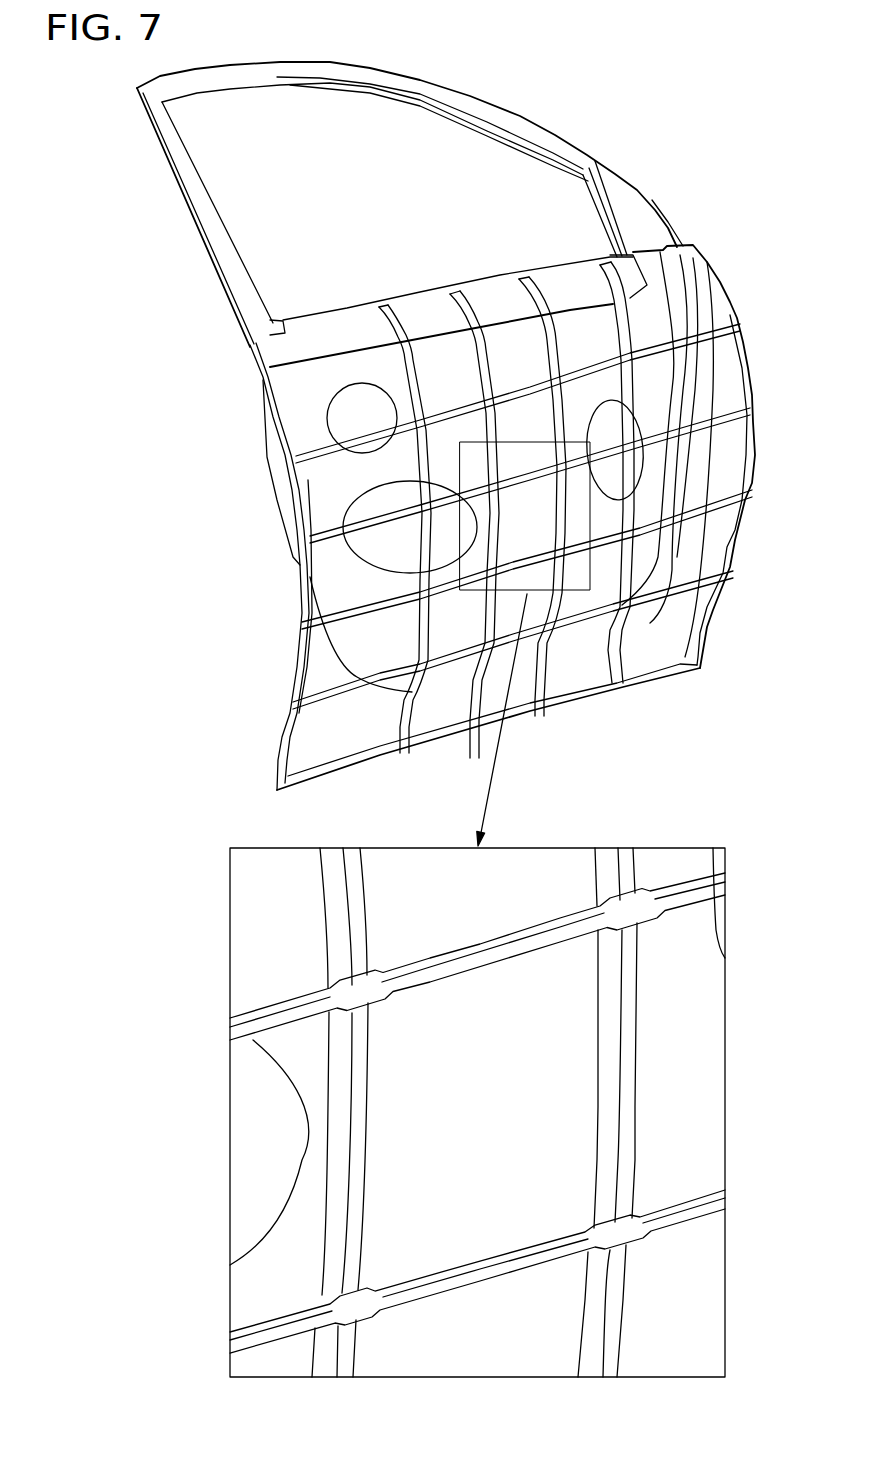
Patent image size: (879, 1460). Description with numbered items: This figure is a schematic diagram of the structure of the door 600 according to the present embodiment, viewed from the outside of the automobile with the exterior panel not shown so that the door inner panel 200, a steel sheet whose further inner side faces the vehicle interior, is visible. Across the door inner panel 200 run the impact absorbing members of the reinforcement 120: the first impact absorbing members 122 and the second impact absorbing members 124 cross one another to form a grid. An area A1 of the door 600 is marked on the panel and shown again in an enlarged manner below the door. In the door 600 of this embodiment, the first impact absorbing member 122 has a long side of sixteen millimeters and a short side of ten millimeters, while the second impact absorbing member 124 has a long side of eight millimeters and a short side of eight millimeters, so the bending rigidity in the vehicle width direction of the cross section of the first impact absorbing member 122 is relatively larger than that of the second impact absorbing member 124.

The reinforcement structure 120 is at (658, 37).
The first impact absorbing member 122 is at (483, 330).
The second impact absorbing member 124 is at (537, 372).
The door inner panel 200 is at (356, 655).
The door 600 is at (803, 680).
The area A1 is at (580, 596).